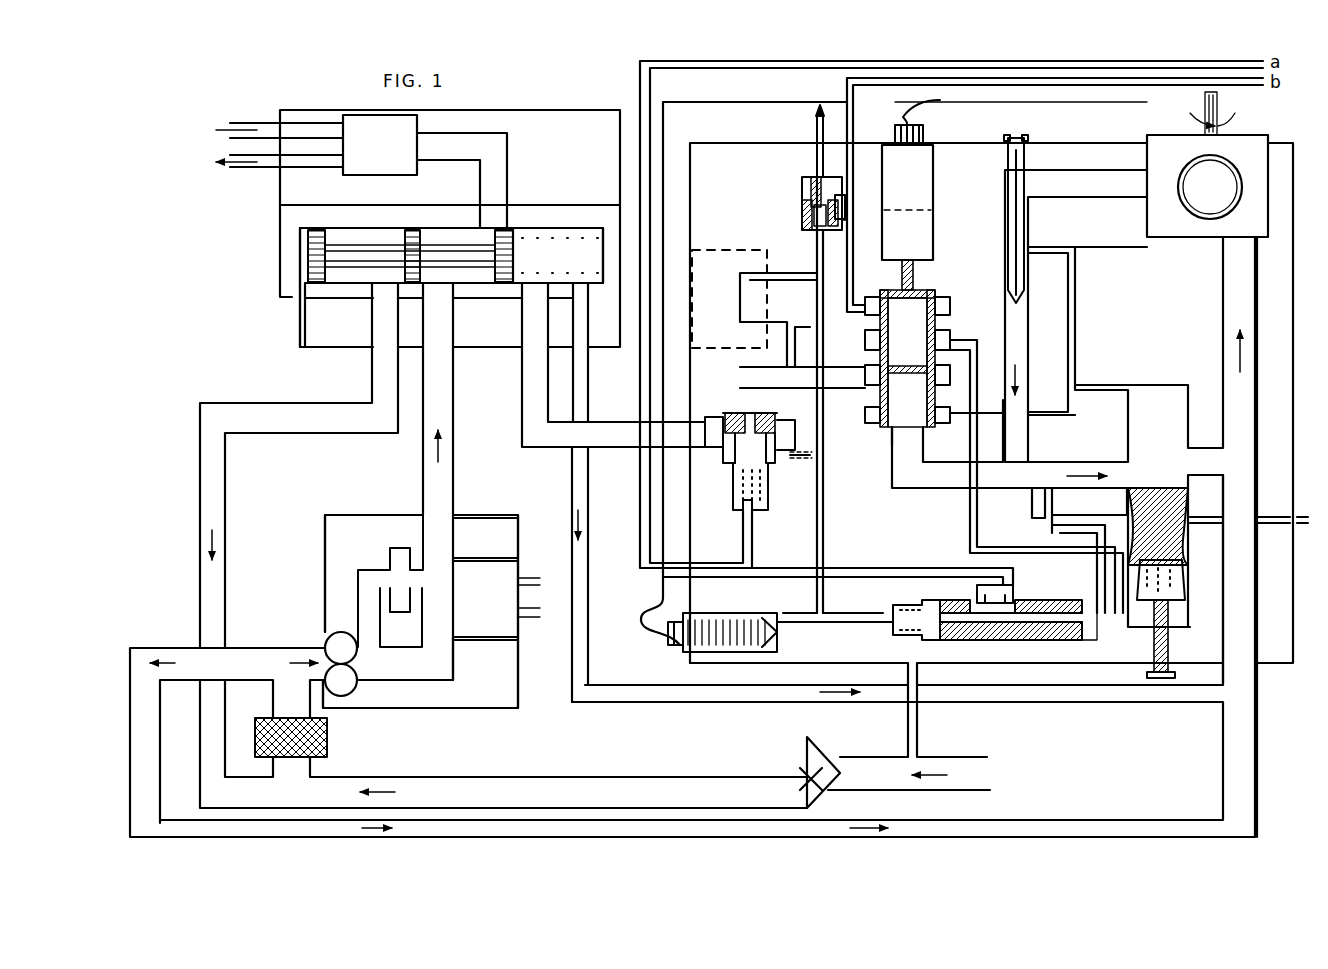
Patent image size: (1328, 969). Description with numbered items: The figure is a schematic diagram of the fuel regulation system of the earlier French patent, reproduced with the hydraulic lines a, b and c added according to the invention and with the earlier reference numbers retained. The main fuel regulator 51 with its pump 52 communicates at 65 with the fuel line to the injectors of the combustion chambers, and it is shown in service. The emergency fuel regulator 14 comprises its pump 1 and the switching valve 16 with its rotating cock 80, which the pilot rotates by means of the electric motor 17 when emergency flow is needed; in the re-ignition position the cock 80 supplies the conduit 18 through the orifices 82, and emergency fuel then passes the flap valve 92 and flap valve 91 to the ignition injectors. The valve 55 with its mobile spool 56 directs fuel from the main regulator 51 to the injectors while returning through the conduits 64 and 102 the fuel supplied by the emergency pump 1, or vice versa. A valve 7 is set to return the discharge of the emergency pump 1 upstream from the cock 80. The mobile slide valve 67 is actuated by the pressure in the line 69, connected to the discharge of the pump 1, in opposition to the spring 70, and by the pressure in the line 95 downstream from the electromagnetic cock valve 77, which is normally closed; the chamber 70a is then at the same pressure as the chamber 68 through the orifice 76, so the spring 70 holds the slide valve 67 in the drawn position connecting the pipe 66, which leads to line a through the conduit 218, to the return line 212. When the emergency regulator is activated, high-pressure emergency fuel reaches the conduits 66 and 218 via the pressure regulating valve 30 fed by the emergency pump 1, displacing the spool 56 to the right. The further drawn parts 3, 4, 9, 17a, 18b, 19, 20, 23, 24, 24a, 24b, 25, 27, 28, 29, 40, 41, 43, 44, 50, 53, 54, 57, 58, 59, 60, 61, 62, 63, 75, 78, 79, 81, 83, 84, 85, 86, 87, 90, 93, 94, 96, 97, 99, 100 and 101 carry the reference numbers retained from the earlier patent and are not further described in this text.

The emergency pump 1 is at (1216, 197).
The pressure chamber 3 is at (1028, 222).
The pressure line 4 is at (1007, 292).
The valve 7 is at (1178, 372).
The pressure line 9 is at (1244, 521).
The emergency fuel regulator 14 is at (1093, 141).
The switching valve 16 is at (868, 440).
The electric motor 17 is at (920, 191).
The armature 17a is at (925, 247).
The conduit 18 is at (848, 205).
The relief valve housing 18b is at (793, 168).
The line 19 is at (1075, 353).
The piston 20 is at (1171, 583).
The control pressure line 23 is at (773, 389).
The valve spool 24 is at (763, 498).
The spool end 24a is at (745, 412).
The spool end 24b is at (736, 496).
The valve seat 25 is at (730, 415).
The sensor needle 27 is at (1012, 136).
The line 28 is at (792, 325).
The control unit 29 is at (740, 301).
The pressure regulating valve 30 is at (724, 479).
The chamber 40 is at (1063, 415).
The line 41 is at (970, 523).
The line 43 is at (978, 507).
The line 44 is at (1070, 287).
The steering gear housing 50 is at (1172, 297).
The main fuel regulator 51 is at (493, 556).
The pump 52 is at (357, 655).
The check valve 53 is at (827, 779).
The filter 54 is at (305, 738).
The valve 55 is at (268, 230).
The mobile spool 56 is at (410, 256).
The spool land 57 is at (308, 248).
The spool land 58 is at (420, 232).
The spool land 59 is at (515, 254).
The spring chamber 60 is at (603, 266).
The spring 61 is at (578, 237).
The line 62 is at (441, 350).
The line 63 is at (372, 371).
The conduit 64 is at (528, 392).
The fuel line connection 65 is at (493, 157).
The pipe 66 is at (300, 314).
The mobile slide valve 67 is at (950, 596).
The chamber 68 is at (1085, 635).
The line 69 is at (1052, 507).
The spring 70 is at (910, 632).
The chamber 70a is at (895, 612).
The cylinder 75 is at (1062, 600).
The orifice 76 is at (1005, 620).
The electromagnetic cock valve 77 is at (676, 654).
The spring 78 is at (775, 638).
The line 79 is at (917, 737).
The rotating cock 80 is at (930, 291).
The valve bore 81 is at (880, 440).
The orifices 82 is at (927, 308).
The port 83 is at (927, 341).
The port 84 is at (925, 372).
The valve spool 85 is at (922, 382).
The port 86 is at (925, 420).
The control edge 87 is at (880, 375).
The outlet 90 is at (836, 177).
The flap valve 91 is at (808, 216).
The flap valve 92 is at (802, 187).
The valve seat 93 is at (812, 223).
The line 94 is at (823, 533).
The line 95 is at (840, 623).
The valve ball 96 is at (818, 226).
The spring 97 is at (840, 222).
The bore 99 is at (763, 492).
The chamber 100 is at (758, 414).
The line 101 is at (752, 557).
The conduit 102 is at (580, 360).
The return line 212 is at (1002, 590).
The conduit 218 is at (817, 66).